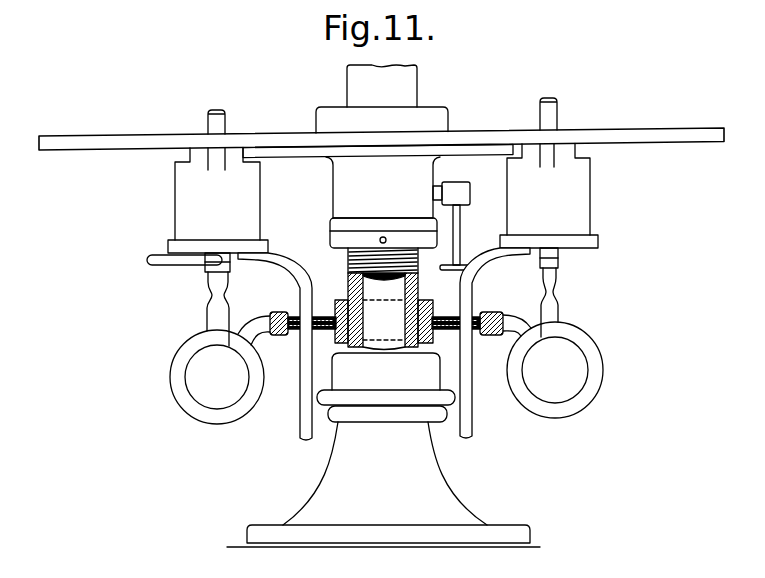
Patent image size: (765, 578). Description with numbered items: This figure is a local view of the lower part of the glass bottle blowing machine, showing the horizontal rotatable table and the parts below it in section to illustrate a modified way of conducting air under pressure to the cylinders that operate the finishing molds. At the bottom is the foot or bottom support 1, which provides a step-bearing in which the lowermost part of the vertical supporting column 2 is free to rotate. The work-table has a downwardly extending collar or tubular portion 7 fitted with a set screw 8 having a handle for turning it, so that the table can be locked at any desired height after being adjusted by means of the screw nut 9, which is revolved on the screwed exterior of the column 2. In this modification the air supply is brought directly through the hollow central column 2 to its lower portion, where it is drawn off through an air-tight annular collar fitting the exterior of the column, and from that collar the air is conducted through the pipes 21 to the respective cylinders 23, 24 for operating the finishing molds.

The foot or bottom support 1 is at (383, 450).
The vertical supporting column 2 is at (418, 289).
The downwardly extending collar or tubular portion 7 is at (383, 187).
The set screw 8 is at (470, 190).
The screw nut 9 is at (437, 237).
The pipes 21 is at (213, 412).
The cylinder 23 is at (192, 199).
The cylinder 24 is at (568, 197).